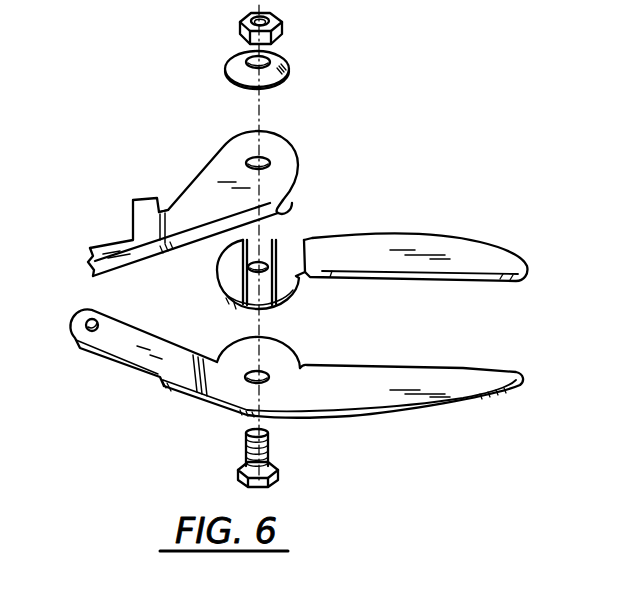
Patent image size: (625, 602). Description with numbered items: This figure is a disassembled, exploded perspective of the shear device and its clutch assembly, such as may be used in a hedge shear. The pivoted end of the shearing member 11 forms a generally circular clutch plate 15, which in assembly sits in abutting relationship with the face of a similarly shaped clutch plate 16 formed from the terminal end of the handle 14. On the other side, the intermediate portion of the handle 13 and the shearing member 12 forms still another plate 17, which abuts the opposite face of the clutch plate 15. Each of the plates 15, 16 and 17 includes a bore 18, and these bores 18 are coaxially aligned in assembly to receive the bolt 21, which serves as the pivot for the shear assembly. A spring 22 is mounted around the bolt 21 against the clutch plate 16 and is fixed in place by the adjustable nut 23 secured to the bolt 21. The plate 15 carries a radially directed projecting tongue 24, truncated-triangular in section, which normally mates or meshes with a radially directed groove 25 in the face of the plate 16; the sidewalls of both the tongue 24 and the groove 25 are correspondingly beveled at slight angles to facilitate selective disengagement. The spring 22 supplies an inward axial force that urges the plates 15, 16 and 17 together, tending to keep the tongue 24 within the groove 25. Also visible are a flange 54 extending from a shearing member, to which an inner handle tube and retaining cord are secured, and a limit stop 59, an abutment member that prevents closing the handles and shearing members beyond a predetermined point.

The shearing member 11 is at (473, 253).
The shearing member 12 is at (473, 378).
The handle 13 is at (164, 342).
The handle 14 is at (167, 209).
The clutch plate 15 is at (218, 286).
The clutch plate 16 is at (297, 172).
The plate 17 is at (240, 350).
The bore 18 is at (268, 159).
The bolt 21 is at (268, 460).
The spring 22 is at (280, 68).
The adjustable nut 23 is at (278, 22).
The projecting tongue 24 is at (270, 238).
The groove 25 is at (273, 210).
The flange 54 is at (133, 348).
The limit stop 59 is at (137, 198).